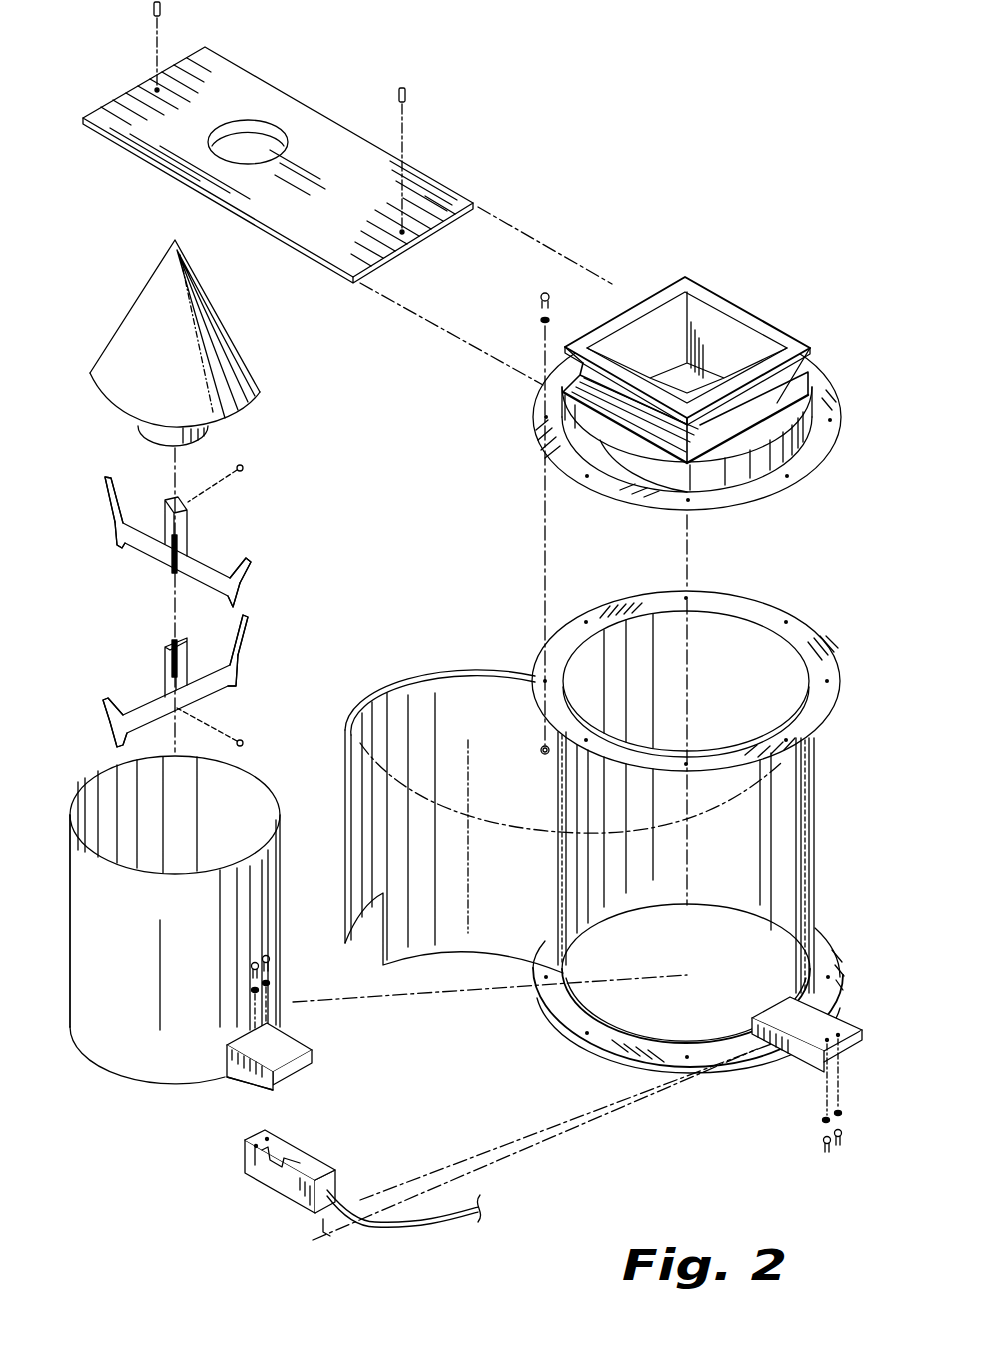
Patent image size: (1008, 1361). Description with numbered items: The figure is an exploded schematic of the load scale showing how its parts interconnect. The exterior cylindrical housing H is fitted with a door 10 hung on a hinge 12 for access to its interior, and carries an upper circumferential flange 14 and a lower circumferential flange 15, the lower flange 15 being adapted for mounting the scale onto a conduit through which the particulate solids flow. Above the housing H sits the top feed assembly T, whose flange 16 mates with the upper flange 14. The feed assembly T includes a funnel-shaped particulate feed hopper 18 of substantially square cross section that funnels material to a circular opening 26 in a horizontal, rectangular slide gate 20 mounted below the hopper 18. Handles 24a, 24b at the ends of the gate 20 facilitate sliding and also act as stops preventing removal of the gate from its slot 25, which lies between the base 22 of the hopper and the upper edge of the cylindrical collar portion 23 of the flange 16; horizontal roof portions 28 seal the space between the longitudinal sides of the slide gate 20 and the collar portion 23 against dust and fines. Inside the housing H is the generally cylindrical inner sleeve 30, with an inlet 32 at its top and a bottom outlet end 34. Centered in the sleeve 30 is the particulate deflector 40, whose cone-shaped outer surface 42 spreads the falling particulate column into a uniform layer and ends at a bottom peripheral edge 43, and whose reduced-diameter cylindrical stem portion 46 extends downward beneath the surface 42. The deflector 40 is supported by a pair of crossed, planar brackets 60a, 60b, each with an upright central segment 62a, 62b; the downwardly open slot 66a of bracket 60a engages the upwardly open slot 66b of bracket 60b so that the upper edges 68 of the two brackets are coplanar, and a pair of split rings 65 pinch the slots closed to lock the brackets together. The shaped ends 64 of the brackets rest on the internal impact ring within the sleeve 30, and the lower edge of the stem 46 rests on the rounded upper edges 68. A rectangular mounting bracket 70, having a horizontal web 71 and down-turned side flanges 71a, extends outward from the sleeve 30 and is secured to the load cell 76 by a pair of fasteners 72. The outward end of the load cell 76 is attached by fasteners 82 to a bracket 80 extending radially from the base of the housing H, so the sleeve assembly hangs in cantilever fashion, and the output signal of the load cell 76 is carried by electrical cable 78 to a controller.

The door 10 is at (445, 903).
The hinge 12 is at (575, 935).
The upper circumferential flange 14 is at (816, 712).
The lower circumferential flange 15 is at (826, 960).
The flange 16 is at (815, 452).
The particulate feed hopper 18 is at (712, 300).
The slide gate 20 is at (323, 157).
The base of the hopper 22 is at (720, 445).
The collar portion 23 is at (762, 472).
The handle 24a is at (408, 95).
The handle 24b is at (162, 9).
The slot 25 is at (700, 493).
The circular opening 26 is at (252, 140).
The horizontal roof portions 28 is at (798, 383).
The inner sleeve 30 is at (197, 954).
The inlet 32 is at (230, 803).
The bottom outlet end 34 is at (160, 1086).
The particulate solids deflector 40 is at (226, 343).
The outer surface 42 is at (190, 288).
The bottom peripheral edge 43 is at (253, 398).
The cylindrical stem portion 46 is at (215, 432).
The cross bracket 60a is at (188, 668).
The cross bracket 60b is at (162, 542).
The central segment 62a is at (125, 643).
The central segment 62b is at (164, 540).
The ends of the brackets 64 is at (105, 525).
The split rings 65 is at (244, 469).
The vertical slot 66a is at (166, 636).
The vertical slot 66b is at (170, 573).
The upper edges 68 is at (142, 525).
The mounting bracket 70 is at (280, 1070).
The horizontal mounting web 71 is at (282, 1052).
The down turned side flanges 71a is at (246, 1079).
The fasteners 72 is at (258, 960).
The load cell 76 is at (320, 1163).
The electrical cable 78 is at (447, 1218).
The bracket 80 is at (800, 1060).
The fasteners 82 is at (832, 1155).
The exterior cylindrical housing H is at (637, 782).
The top feed assembly T is at (667, 389).